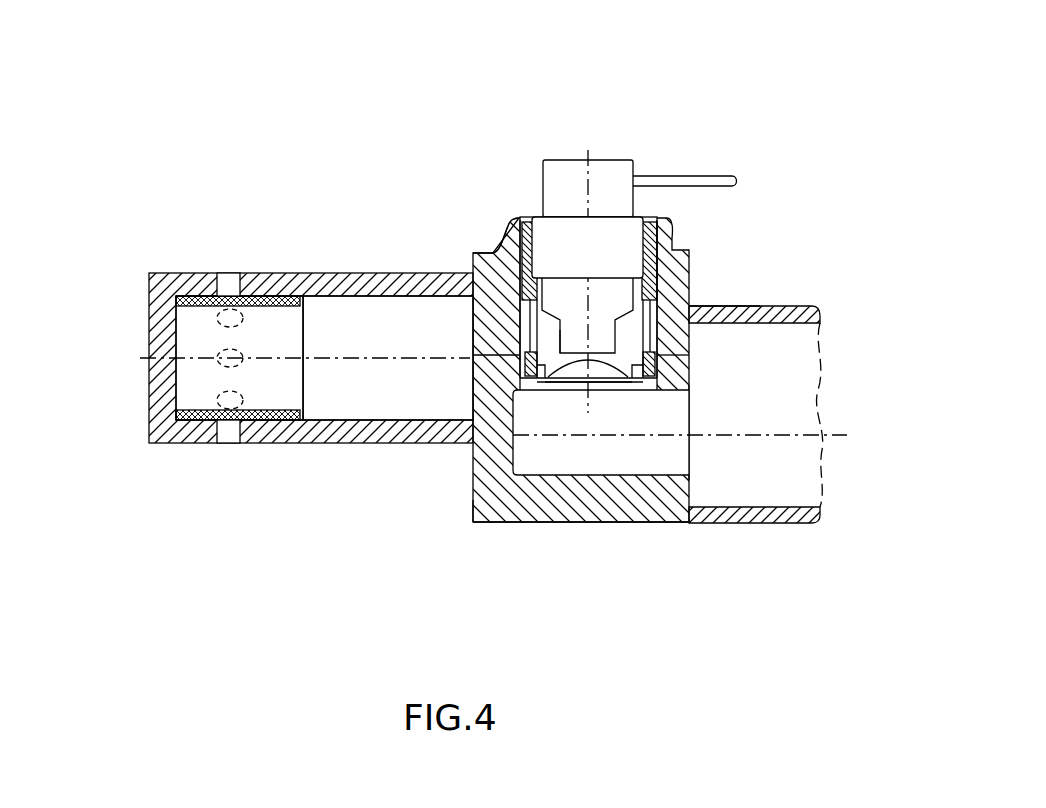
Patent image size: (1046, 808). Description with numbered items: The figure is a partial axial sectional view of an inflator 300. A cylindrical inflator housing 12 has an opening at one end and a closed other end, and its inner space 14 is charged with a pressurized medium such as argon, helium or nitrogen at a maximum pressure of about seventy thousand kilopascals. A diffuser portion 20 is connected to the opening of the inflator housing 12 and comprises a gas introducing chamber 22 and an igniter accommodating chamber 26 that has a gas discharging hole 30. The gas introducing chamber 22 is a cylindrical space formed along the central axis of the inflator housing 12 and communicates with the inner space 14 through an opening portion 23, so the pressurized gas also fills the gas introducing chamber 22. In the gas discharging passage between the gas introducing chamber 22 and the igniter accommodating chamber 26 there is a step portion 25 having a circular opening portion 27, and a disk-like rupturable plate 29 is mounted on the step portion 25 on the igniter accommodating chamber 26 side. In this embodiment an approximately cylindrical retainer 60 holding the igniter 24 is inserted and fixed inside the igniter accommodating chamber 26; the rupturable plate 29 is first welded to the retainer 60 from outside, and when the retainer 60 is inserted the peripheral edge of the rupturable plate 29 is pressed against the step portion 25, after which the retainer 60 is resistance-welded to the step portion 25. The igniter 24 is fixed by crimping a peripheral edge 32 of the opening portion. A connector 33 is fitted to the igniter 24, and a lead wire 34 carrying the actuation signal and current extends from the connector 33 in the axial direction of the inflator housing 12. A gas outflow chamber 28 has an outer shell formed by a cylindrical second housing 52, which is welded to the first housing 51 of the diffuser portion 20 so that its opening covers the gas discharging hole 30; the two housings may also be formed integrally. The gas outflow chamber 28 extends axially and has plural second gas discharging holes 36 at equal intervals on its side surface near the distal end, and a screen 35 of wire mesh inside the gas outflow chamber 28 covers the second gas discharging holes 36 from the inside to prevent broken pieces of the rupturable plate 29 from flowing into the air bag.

The inflator housing 12 is at (763, 527).
The inner space 14 is at (759, 396).
The diffuser portion 20 is at (538, 137).
The gas introducing chamber 22 is at (550, 462).
The opening portion 23 is at (687, 520).
The igniter 24 is at (568, 240).
The step portion 25 is at (530, 383).
The igniter accommodating chamber 26 is at (627, 327).
The circular opening portion 27 is at (615, 385).
The gas outflow chamber 28 is at (372, 337).
The rupturable plate 29 is at (724, 306).
The gas discharging hole 30 is at (478, 310).
The peripheral edge 32 is at (672, 222).
The connector 33 is at (605, 170).
The lead wire 34 is at (720, 178).
The screen 35 is at (192, 322).
The second gas discharging holes 36 is at (228, 288).
The first housing 51 is at (505, 510).
The second housing 52 is at (305, 278).
The retainer 60 is at (492, 252).
The inflator 300 is at (453, 522).